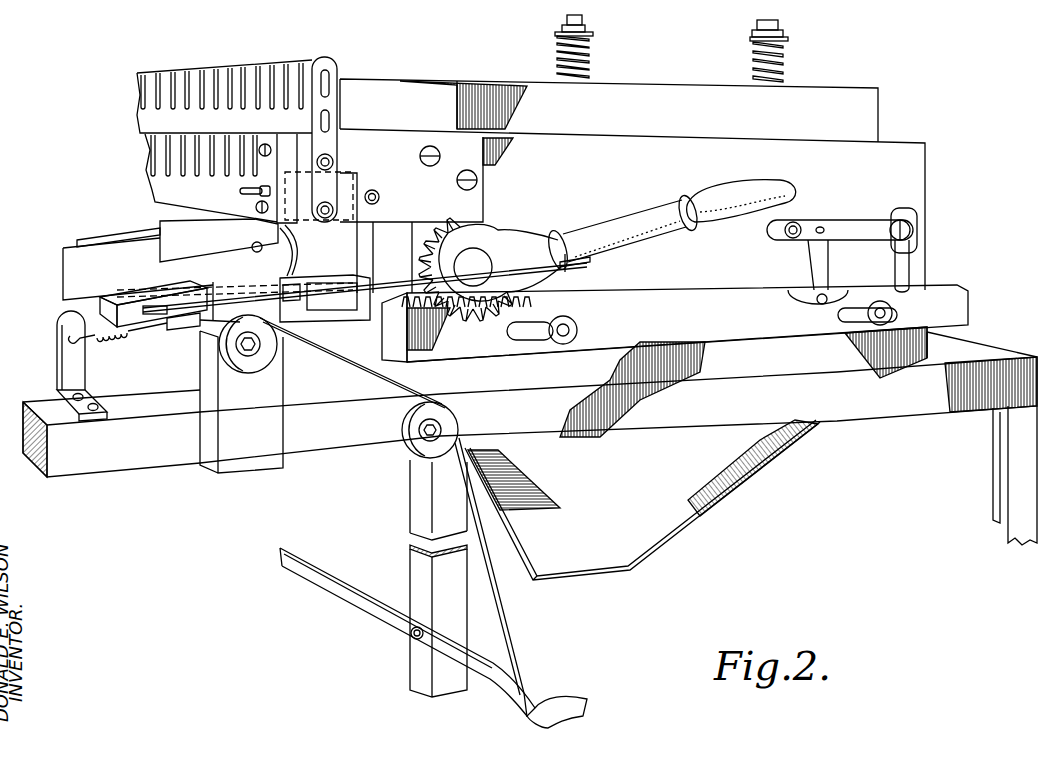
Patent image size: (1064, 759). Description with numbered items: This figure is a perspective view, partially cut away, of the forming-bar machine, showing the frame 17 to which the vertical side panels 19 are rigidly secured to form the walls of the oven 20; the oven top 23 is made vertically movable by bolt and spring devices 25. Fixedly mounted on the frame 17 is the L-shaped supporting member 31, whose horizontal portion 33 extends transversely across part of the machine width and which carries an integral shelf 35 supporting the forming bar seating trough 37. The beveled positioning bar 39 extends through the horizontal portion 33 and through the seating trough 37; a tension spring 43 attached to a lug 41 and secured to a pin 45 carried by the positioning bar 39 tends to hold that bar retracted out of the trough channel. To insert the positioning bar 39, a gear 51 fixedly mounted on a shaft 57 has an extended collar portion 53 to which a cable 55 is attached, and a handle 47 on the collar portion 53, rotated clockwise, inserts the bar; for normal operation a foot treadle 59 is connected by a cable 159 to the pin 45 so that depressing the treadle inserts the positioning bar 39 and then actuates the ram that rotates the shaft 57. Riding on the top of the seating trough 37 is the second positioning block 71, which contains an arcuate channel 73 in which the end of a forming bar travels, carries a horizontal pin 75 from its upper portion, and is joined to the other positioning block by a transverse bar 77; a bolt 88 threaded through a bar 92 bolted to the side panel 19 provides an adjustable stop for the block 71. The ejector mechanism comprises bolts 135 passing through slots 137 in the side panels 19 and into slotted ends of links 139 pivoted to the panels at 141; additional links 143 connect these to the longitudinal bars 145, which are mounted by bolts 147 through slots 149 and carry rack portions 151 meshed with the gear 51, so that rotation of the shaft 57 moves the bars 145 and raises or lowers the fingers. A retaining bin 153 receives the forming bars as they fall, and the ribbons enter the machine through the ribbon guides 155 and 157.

The frame 17 is at (1033, 353).
The vertical side panels 19 is at (912, 171).
The oven 20 is at (887, 143).
The oven top 23 is at (830, 94).
The bolt and spring devices 25 is at (584, 19).
The L-shaped supporting member 31 is at (247, 462).
The horizontal portion 33 is at (63, 268).
The shelf 35 is at (353, 327).
The forming bar seating trough 37 is at (84, 238).
The beveled positioning bar 39 is at (100, 300).
The lug 41 is at (67, 366).
The tension spring 43 is at (113, 341).
The pin 45 is at (176, 331).
The handle 47 is at (732, 192).
The gear 51 is at (492, 251).
The collar portion 53 is at (535, 247).
The cable 55 is at (557, 266).
The shaft 57 is at (477, 264).
The foot treadle 59 is at (343, 597).
The second positioning block 71 is at (355, 245).
The arcuate channel 73 is at (305, 250).
The horizontal pin 75 is at (253, 195).
The transverse bar 77 is at (155, 233).
The bolt 88 is at (381, 197).
The bar 92 is at (403, 148).
The bolts 135 is at (913, 231).
The slots 137 is at (917, 261).
The links 139 is at (843, 222).
The pivot connection 141 is at (792, 242).
The additional links 143 is at (820, 261).
The longitudinal bars 145 is at (732, 322).
The bolts 147 is at (578, 329).
The slots 149 is at (513, 334).
The rack portions 151 is at (490, 308).
The retaining bin 153 is at (677, 517).
The ribbon guide 155 is at (137, 76).
The ribbon guide 157 is at (157, 185).
The cable 159 is at (337, 362).